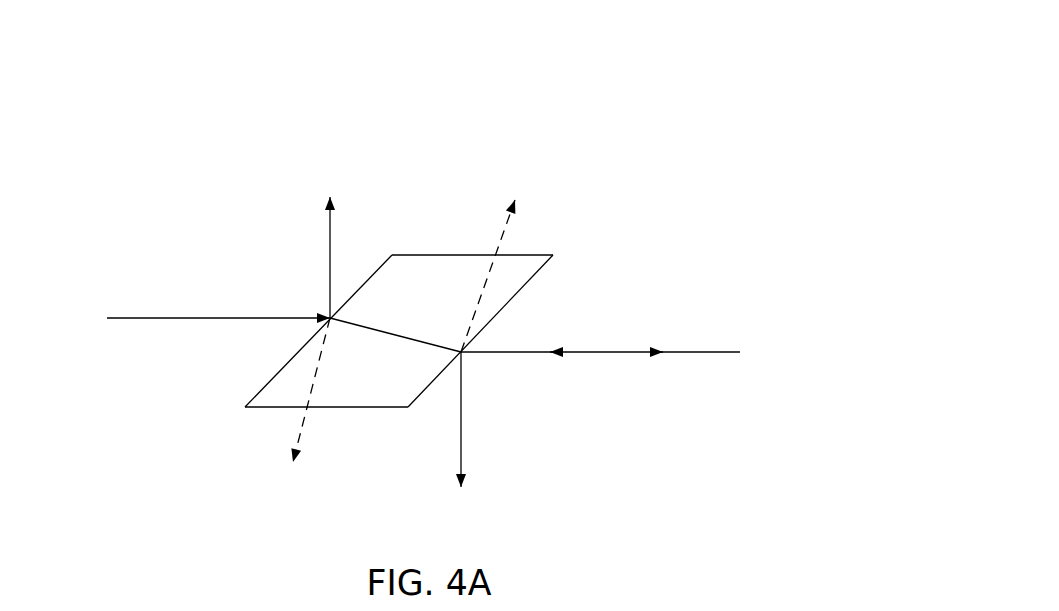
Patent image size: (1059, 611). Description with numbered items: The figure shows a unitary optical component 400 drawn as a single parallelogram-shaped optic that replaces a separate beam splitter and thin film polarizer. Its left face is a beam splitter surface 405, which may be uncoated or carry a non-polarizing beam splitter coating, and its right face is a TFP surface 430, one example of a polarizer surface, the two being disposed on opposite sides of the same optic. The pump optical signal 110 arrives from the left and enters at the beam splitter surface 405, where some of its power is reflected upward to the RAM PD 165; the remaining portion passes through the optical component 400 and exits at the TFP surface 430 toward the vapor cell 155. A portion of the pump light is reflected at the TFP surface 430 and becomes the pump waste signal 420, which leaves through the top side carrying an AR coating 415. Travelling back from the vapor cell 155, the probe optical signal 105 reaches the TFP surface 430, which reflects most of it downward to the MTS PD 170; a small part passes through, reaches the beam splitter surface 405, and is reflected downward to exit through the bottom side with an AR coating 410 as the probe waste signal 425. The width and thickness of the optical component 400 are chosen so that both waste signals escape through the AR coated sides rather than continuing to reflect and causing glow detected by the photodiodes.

The optical component 400 is at (455, 275).
The beam splitter surface 405 is at (280, 365).
The AR coating 410 is at (260, 408).
The AR coating 415 is at (430, 253).
The pump waste signal 420 is at (513, 227).
The probe waste signal 425 is at (290, 442).
The TFP surface 430 is at (518, 300).
The probe beam 110 is at (143, 318).
The probe optical signal 105 is at (604, 353).
The vapor cell 155 is at (633, 316).
The RAM PD 165 is at (329, 231).
The MTS PD 170 is at (460, 448).